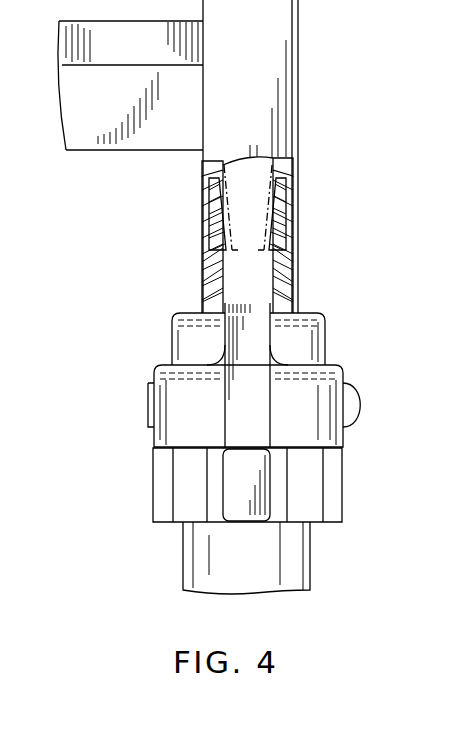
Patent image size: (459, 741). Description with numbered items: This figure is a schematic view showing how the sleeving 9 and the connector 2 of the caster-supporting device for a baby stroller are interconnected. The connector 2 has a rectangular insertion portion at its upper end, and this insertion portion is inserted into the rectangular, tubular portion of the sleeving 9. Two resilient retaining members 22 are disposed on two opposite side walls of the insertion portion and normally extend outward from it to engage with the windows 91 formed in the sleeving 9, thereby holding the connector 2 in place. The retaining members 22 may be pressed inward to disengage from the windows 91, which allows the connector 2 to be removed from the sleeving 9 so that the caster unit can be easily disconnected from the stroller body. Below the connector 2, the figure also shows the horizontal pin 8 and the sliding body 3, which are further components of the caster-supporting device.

The sleeving 9 is at (298, 35).
The resilient retaining members 22 is at (293, 193).
The windows 91 is at (201, 188).
The connector 2 is at (302, 338).
The horizontal pin 8 is at (346, 388).
The sliding body 3 is at (270, 476).